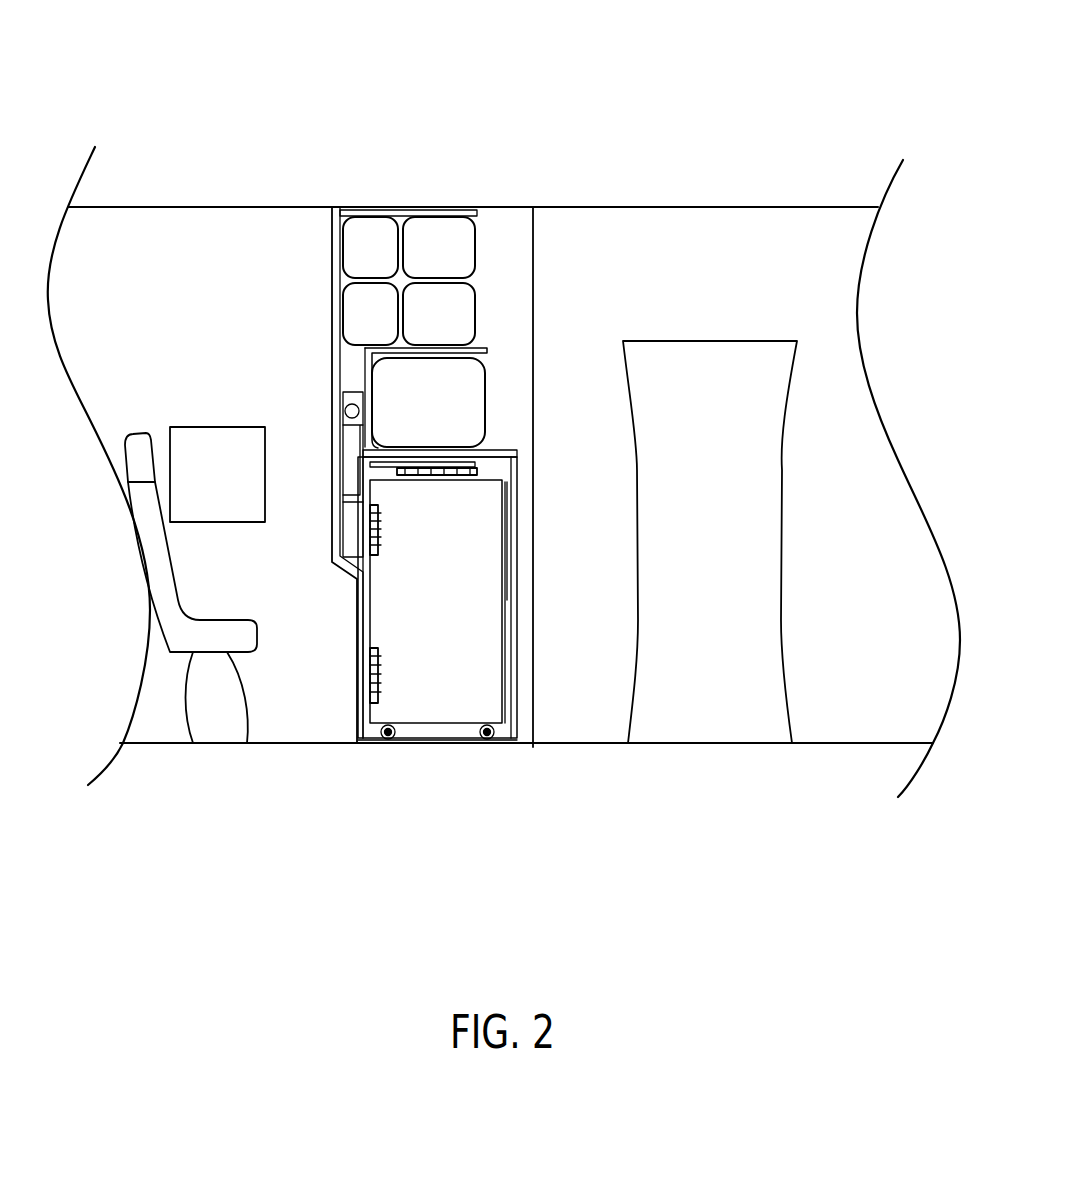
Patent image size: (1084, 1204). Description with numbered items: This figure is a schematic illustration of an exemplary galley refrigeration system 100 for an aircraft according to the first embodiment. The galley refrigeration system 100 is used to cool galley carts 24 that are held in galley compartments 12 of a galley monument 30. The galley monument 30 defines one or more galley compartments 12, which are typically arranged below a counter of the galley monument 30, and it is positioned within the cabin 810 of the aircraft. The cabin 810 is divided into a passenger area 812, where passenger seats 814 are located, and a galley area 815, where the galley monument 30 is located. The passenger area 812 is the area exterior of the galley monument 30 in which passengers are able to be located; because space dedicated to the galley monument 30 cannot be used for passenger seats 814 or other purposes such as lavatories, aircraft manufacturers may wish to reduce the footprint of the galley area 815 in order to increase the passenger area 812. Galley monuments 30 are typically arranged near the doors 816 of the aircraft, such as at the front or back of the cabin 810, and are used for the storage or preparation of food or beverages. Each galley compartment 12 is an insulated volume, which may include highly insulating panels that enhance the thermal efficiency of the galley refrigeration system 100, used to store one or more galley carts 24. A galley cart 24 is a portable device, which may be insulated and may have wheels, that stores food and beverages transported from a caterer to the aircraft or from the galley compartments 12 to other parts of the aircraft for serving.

The galley refrigeration system 100 is at (472, 432).
The cabin 810 is at (157, 273).
The passenger area 812 is at (115, 408).
The passenger seats 814 is at (177, 631).
The galley area 815 is at (492, 235).
The doors 816 is at (725, 511).
The galley compartment 12 is at (430, 641).
The galley cart 24 is at (433, 695).
The galley monument 30 is at (532, 613).